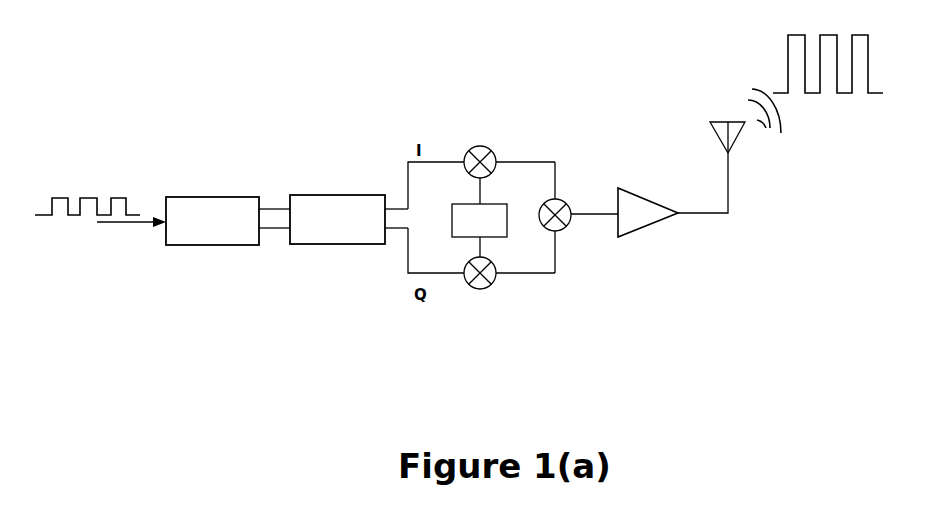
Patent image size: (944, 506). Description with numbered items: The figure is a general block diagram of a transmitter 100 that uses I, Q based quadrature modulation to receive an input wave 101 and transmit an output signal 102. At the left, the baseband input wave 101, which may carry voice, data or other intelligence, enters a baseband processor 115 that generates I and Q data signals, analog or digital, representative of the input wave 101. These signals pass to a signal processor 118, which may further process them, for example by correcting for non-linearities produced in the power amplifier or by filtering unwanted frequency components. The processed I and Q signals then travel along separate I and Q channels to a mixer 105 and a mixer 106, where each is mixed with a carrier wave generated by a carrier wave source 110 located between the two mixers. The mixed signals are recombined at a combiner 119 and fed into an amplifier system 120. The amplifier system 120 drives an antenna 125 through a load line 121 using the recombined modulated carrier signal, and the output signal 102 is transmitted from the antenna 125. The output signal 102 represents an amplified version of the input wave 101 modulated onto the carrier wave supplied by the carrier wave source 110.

The transmitter 100 is at (358, 150).
The input wave 101 is at (55, 198).
The output signal 102 is at (813, 60).
The mixer 105 is at (494, 155).
The mixer 106 is at (496, 285).
The carrier wave source 110 is at (479, 217).
The baseband processor 115 is at (212, 221).
The signal processor 118 is at (337, 219).
The combiner 119 is at (571, 210).
The amplifier system 120 is at (648, 212).
The load line 121 is at (728, 185).
The antenna 125 is at (710, 131).